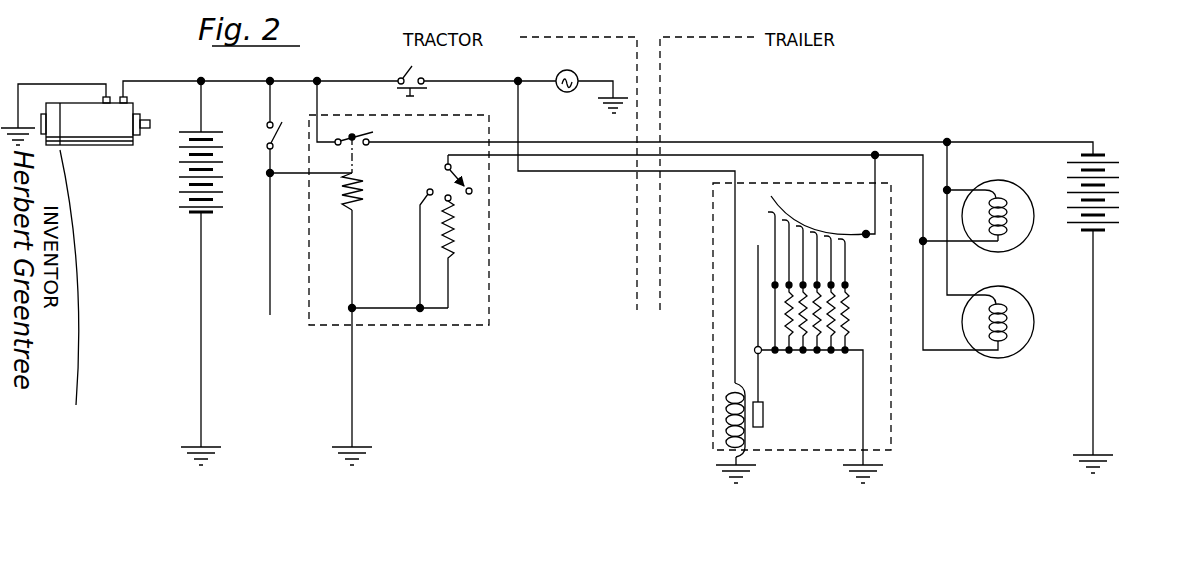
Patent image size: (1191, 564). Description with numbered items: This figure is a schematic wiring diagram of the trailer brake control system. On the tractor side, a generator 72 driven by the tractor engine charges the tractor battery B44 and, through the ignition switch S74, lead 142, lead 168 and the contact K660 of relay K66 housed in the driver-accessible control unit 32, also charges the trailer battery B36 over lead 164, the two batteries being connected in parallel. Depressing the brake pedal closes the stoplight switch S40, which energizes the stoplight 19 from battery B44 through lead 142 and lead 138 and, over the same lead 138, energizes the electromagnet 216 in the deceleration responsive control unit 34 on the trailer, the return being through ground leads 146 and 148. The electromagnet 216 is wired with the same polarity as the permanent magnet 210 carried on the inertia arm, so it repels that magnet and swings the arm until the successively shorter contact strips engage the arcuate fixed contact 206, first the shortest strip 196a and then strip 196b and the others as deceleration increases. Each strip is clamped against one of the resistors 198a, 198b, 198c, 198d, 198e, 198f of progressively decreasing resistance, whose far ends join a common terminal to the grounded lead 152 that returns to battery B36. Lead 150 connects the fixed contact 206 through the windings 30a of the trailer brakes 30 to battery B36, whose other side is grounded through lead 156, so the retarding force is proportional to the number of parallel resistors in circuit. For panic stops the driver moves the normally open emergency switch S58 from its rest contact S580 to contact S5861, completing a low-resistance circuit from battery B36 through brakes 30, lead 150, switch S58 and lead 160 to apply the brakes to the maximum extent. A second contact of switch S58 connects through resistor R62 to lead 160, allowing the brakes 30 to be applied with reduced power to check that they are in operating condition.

The generator 72 is at (121, 145).
The tractor battery B44 is at (178, 183).
The lead 148 is at (201, 320).
The ignition switch S74 is at (263, 134).
The lead 142 is at (300, 80).
The lead 168 is at (318, 92).
The stoplight switch S40 is at (404, 76).
The stoplight 19 is at (573, 73).
The control unit 32 is at (490, 301).
The relay contact K660 is at (375, 134).
The relay K66 is at (346, 193).
The lead 160 is at (352, 372).
The emergency switch S58 is at (437, 180).
The switch contact S580 is at (474, 193).
The switch contact S5861 is at (426, 194).
The resistor R62 is at (456, 232).
The lead 138 is at (606, 172).
The lead 164 is at (760, 142).
The lead 150 is at (929, 155).
The trailer brake control unit 34 is at (893, 450).
The fixed contact 206 is at (826, 229).
The contact strip 196a is at (834, 252).
The contact strip 196b is at (842, 270).
The resistor 198a is at (832, 319).
The resistor 198b is at (839, 319).
The resistor 198c is at (722, 268).
The resistor 198d is at (800, 348).
The resistor 198e is at (786, 350).
The resistor 198f is at (792, 233).
The lead 152 is at (866, 428).
The permanent magnet 210 is at (765, 416).
The electromagnet 216 is at (727, 418).
The lead 146 is at (732, 462).
The trailer brakes 30 is at (1040, 192).
The brake windings 30a is at (991, 194).
The trailer battery B36 is at (1120, 191).
The lead 156 is at (1094, 358).